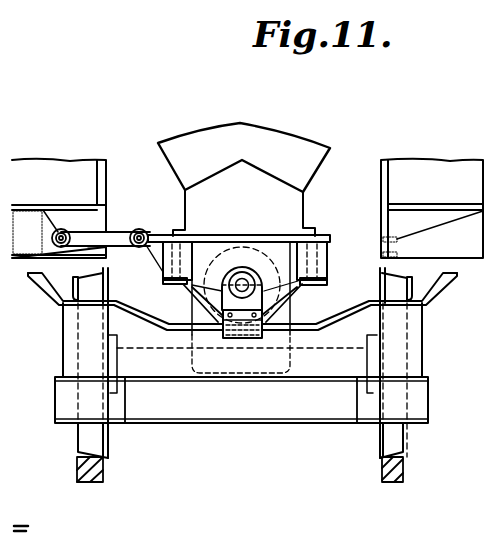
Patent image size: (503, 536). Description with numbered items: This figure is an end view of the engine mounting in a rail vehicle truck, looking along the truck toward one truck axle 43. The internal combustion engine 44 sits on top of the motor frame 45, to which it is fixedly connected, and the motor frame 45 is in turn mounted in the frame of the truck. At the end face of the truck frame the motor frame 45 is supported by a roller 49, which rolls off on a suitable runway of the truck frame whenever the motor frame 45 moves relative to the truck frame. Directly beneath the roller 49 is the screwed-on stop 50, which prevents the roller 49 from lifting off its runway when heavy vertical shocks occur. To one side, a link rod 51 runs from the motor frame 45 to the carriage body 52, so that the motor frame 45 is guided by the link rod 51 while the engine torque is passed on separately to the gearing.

The truck axle 43 is at (336, 370).
The internal combustion engine 44 is at (254, 128).
The motor frame 45 is at (178, 279).
The roller 49 is at (258, 258).
The screwed-on stop 50 is at (247, 338).
The link rod 51 is at (116, 241).
The carriage body 52 is at (95, 218).